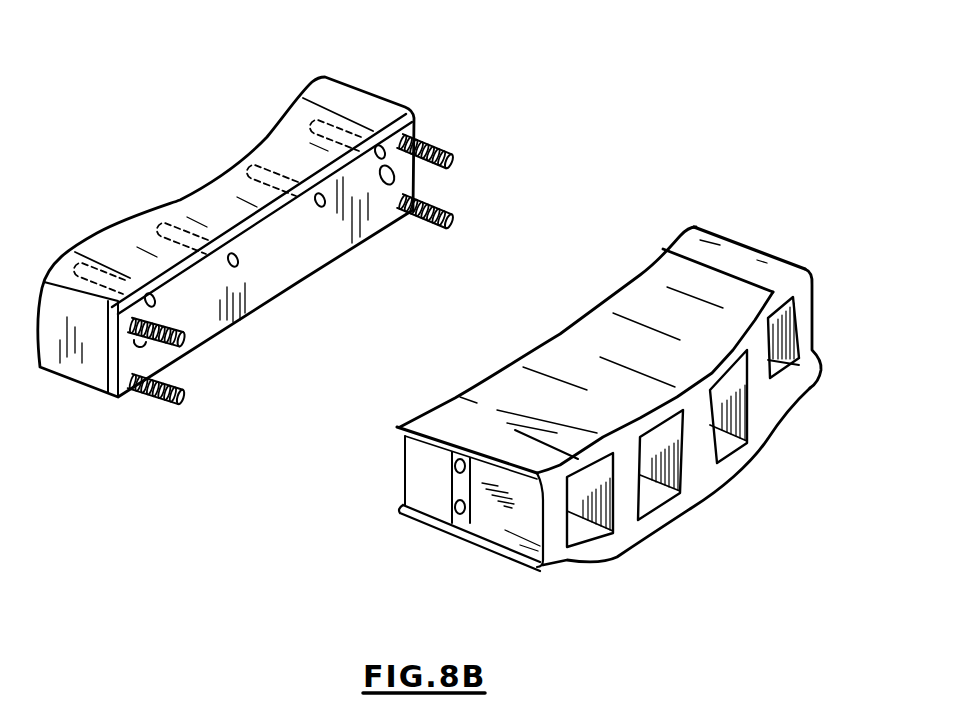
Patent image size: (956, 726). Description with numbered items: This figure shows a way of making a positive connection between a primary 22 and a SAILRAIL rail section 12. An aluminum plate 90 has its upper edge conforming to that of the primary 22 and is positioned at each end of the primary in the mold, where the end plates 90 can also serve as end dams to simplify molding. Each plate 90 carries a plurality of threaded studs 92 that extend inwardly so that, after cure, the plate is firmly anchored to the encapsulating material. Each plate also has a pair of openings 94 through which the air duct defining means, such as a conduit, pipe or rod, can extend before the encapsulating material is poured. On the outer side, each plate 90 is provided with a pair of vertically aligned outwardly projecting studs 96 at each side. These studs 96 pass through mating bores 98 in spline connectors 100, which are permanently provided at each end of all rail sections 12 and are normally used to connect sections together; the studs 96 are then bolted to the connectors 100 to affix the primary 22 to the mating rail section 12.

The curved channel member 12 is at (814, 259).
The primary 22 is at (347, 68).
The aluminum plate 90 is at (426, 109).
The threaded studs 92 is at (382, 90).
The openings 94 is at (394, 181).
The outwardly projecting studs 96 is at (462, 228).
The mating bores 98 is at (470, 455).
The spline connectors 100 is at (430, 488).